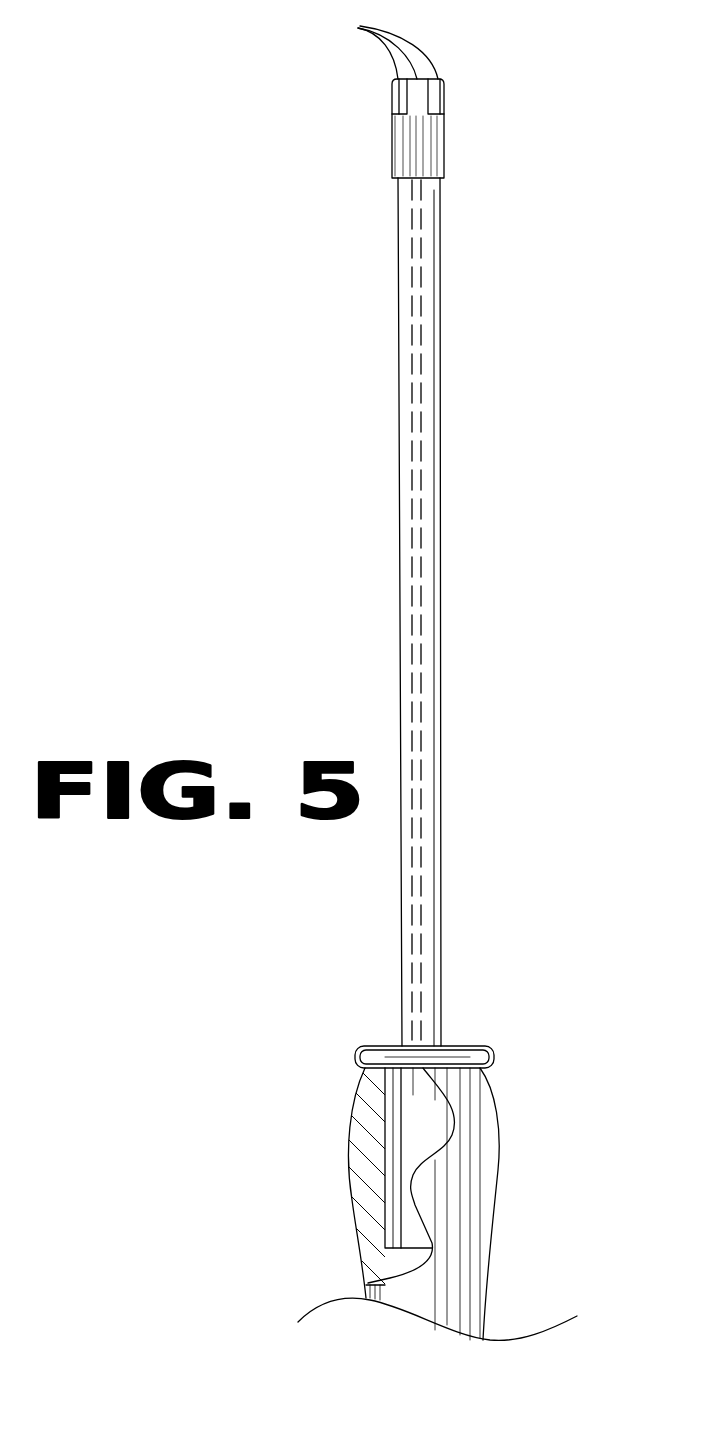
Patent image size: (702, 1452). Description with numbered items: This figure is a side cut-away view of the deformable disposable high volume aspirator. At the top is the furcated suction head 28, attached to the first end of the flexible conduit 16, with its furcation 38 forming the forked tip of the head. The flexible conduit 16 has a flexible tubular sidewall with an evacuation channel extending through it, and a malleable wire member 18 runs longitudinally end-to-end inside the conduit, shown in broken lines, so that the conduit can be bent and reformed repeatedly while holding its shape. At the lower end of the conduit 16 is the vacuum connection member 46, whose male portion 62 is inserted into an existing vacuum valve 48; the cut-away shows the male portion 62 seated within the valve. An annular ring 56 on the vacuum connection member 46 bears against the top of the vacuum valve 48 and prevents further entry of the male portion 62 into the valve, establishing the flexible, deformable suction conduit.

The furcation 38 is at (369, 39).
The furcated suction head 28 is at (437, 150).
The flexible conduit 16 is at (401, 505).
The wire member 18 is at (422, 690).
The annular ring 56 is at (395, 1047).
The vacuum connection member 46 is at (392, 1105).
The vacuum valve 48 is at (492, 1178).
The male portion of vacuum connection member 62 is at (403, 1223).